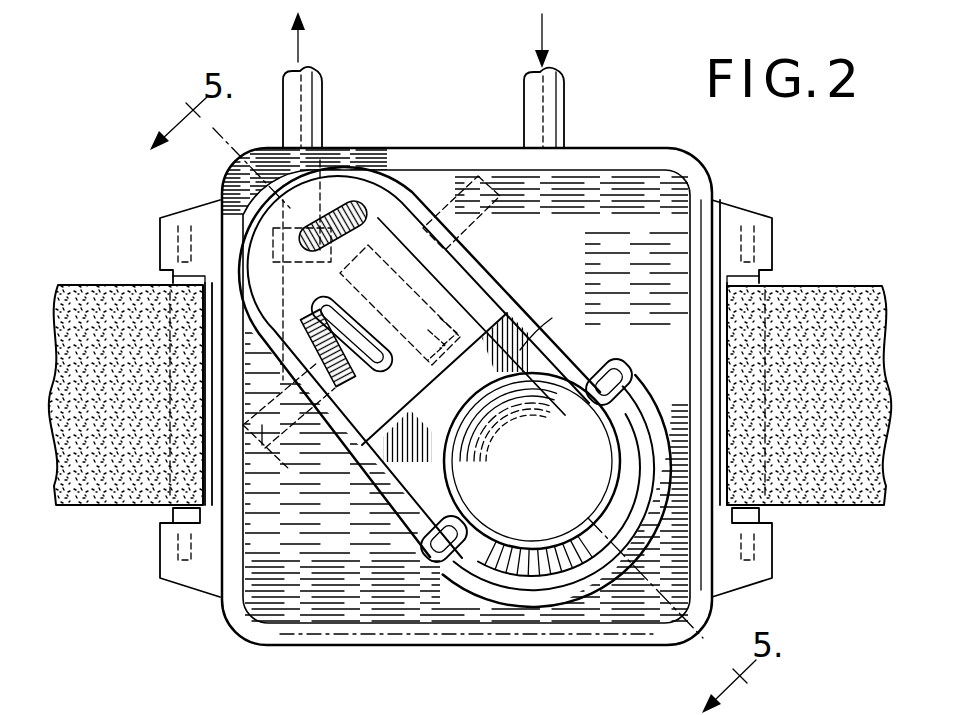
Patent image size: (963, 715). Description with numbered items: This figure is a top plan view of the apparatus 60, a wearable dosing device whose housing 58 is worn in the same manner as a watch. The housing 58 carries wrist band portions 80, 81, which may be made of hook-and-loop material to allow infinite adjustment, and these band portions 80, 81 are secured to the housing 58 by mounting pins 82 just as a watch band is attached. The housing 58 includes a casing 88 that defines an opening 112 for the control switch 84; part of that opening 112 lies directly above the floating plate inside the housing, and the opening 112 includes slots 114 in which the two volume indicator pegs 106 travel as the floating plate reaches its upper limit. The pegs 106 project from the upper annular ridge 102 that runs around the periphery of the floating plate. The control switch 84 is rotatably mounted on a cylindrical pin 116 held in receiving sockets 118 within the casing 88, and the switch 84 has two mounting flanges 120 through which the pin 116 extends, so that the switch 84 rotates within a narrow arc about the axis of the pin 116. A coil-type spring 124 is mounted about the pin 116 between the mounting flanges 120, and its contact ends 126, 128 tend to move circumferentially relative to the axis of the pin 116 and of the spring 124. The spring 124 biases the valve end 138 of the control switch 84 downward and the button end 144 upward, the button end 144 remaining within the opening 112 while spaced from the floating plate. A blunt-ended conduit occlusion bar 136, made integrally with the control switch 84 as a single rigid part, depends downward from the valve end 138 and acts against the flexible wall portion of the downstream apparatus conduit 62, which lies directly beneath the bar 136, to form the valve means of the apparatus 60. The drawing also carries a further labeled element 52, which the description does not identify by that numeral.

The push button post 52 is at (565, 93).
The housing 58 is at (640, 135).
The apparatus 60 is at (712, 152).
The downstream apparatus conduit 62 is at (322, 92).
The wrist band portion 80 is at (830, 503).
The wrist band portion 81 is at (97, 503).
The mounting pins 82 is at (170, 280).
The control switch 84 is at (550, 323).
The casing 88 is at (716, 192).
The upper annular ridge 102 is at (628, 386).
The volume indicator pegs 106 is at (463, 523).
The opening 112 is at (318, 180).
The slots 114 is at (628, 376).
The cylindrical pin 116 is at (507, 193).
The receiving sockets 118 is at (262, 445).
The mounting flanges 120 is at (502, 268).
The coil-type spring 124 is at (300, 296).
The contact end 126 is at (392, 460).
The contact end 128 is at (487, 316).
The conduit occlusion bar 136 is at (272, 231).
The valve end 138 is at (357, 213).
The button end 144 is at (578, 566).